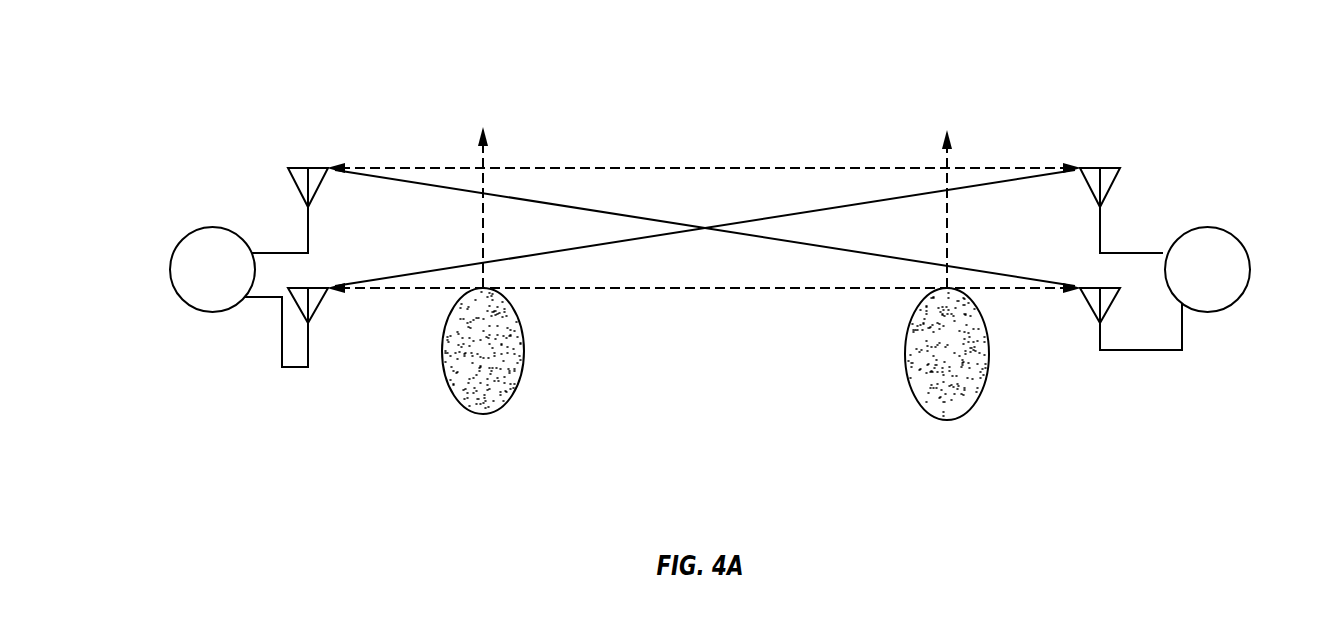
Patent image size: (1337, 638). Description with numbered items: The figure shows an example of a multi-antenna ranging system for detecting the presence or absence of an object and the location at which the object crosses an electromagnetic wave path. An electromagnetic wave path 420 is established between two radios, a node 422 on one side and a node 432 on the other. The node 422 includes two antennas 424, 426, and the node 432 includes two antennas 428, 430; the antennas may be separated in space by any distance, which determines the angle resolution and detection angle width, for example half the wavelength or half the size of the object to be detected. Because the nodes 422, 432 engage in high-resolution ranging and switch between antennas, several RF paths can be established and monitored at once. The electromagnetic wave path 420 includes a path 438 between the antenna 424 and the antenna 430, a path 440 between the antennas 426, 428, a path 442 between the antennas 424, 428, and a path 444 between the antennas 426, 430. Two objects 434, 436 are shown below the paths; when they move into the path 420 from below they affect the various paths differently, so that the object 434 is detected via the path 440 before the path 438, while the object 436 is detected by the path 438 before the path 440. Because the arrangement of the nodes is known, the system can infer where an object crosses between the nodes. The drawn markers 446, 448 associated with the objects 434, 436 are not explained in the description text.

The electromagnetic wave path 420 is at (905, 107).
The node 422 is at (180, 297).
The antenna 424 is at (300, 172).
The antenna 426 is at (312, 300).
The antenna 428 is at (1108, 177).
The antenna 430 is at (1092, 302).
The node 432 is at (1250, 268).
The object 434 is at (523, 348).
The object 436 is at (905, 363).
The path 438 is at (633, 217).
The path 440 is at (847, 207).
The path 442 is at (783, 167).
The path 444 is at (765, 290).
The reflected path from Object 1 446 is at (482, 217).
The reflected path from Object 2 448 is at (947, 223).